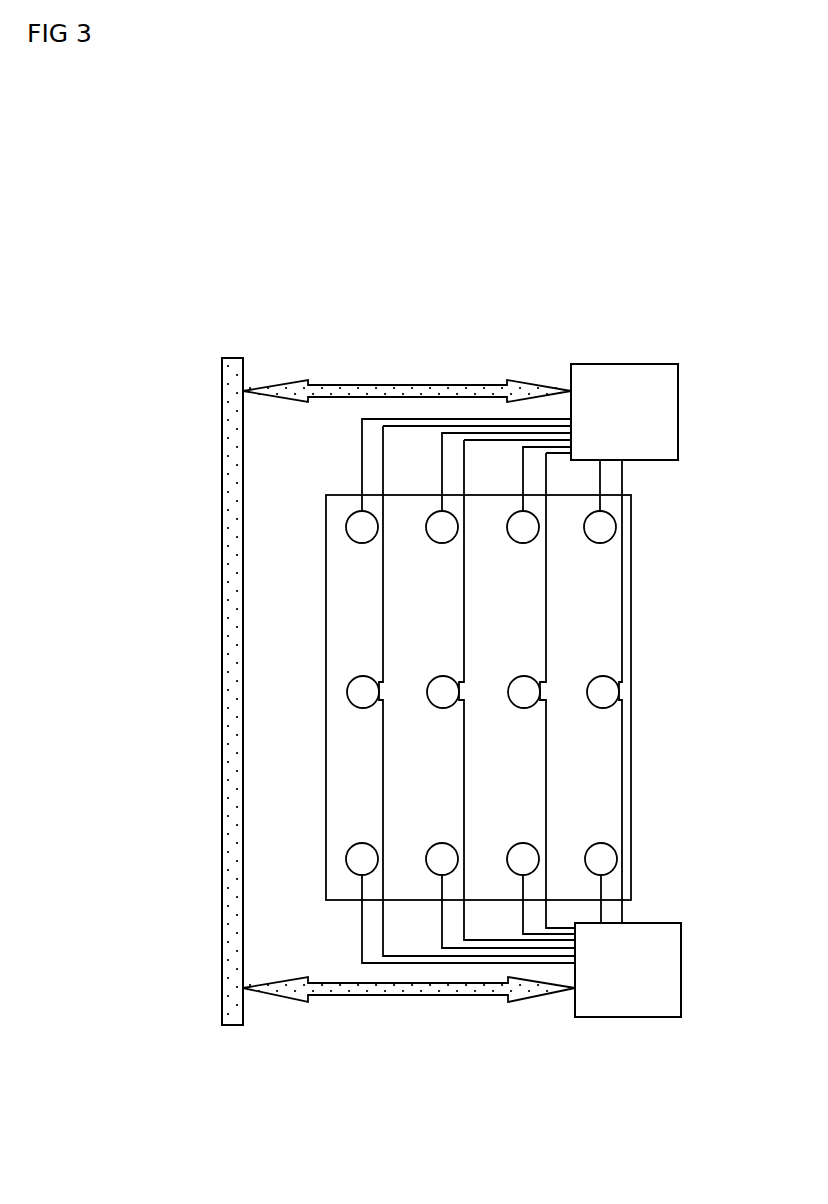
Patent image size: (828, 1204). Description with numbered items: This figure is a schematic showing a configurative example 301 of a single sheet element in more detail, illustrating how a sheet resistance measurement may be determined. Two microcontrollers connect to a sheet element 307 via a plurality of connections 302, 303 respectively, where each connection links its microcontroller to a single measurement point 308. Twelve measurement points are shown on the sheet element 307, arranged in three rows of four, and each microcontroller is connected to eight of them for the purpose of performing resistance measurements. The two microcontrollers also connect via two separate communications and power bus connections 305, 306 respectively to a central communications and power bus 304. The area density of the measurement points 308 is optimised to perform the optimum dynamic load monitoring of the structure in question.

The configurative example of a single sheet element 301 is at (513, 629).
The connections 302 is at (359, 460).
The connections 303 is at (362, 910).
The central communications and power bus 304 is at (222, 652).
The communications and power bus connection 305 is at (437, 385).
The communications and power bus connection 306 is at (457, 997).
The sheet element 307 is at (632, 777).
The measurement point 308 is at (600, 540).